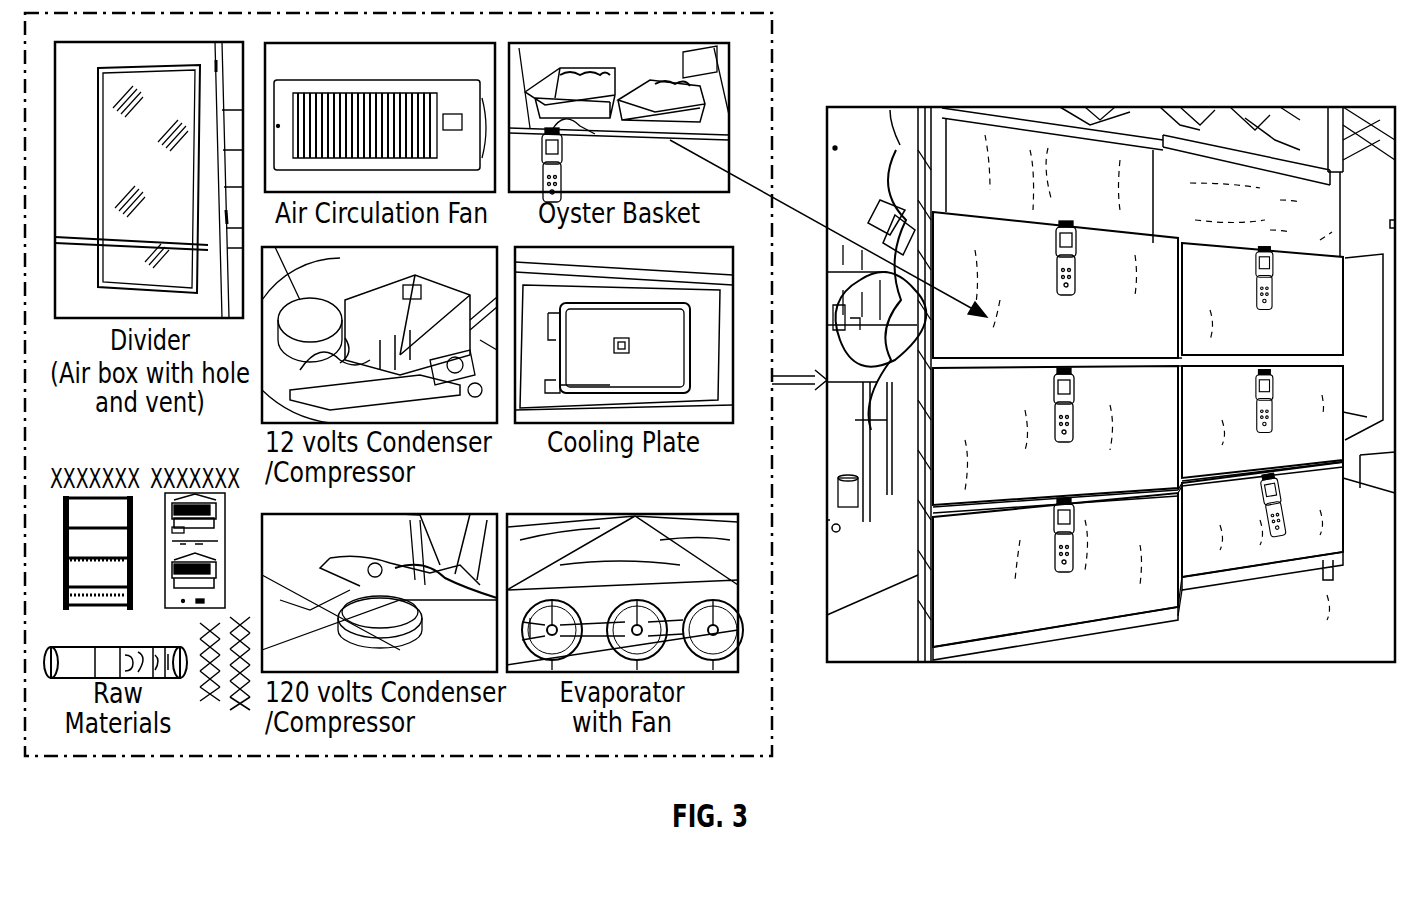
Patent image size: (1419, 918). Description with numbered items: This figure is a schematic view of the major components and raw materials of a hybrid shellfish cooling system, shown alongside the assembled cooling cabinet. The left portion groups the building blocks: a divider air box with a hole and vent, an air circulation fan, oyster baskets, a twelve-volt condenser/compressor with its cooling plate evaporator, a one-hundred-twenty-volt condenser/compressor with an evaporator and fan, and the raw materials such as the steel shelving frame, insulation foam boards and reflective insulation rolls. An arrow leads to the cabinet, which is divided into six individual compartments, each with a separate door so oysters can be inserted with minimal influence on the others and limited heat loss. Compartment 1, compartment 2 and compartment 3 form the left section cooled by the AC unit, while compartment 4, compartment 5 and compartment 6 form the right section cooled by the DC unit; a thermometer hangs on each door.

The compartment 1 is at (1055, 285).
The compartment 2 is at (1055, 435).
The compartment 3 is at (1055, 570).
The compartment 4 is at (1262, 299).
The compartment 5 is at (1262, 422).
The compartment 6 is at (1262, 519).